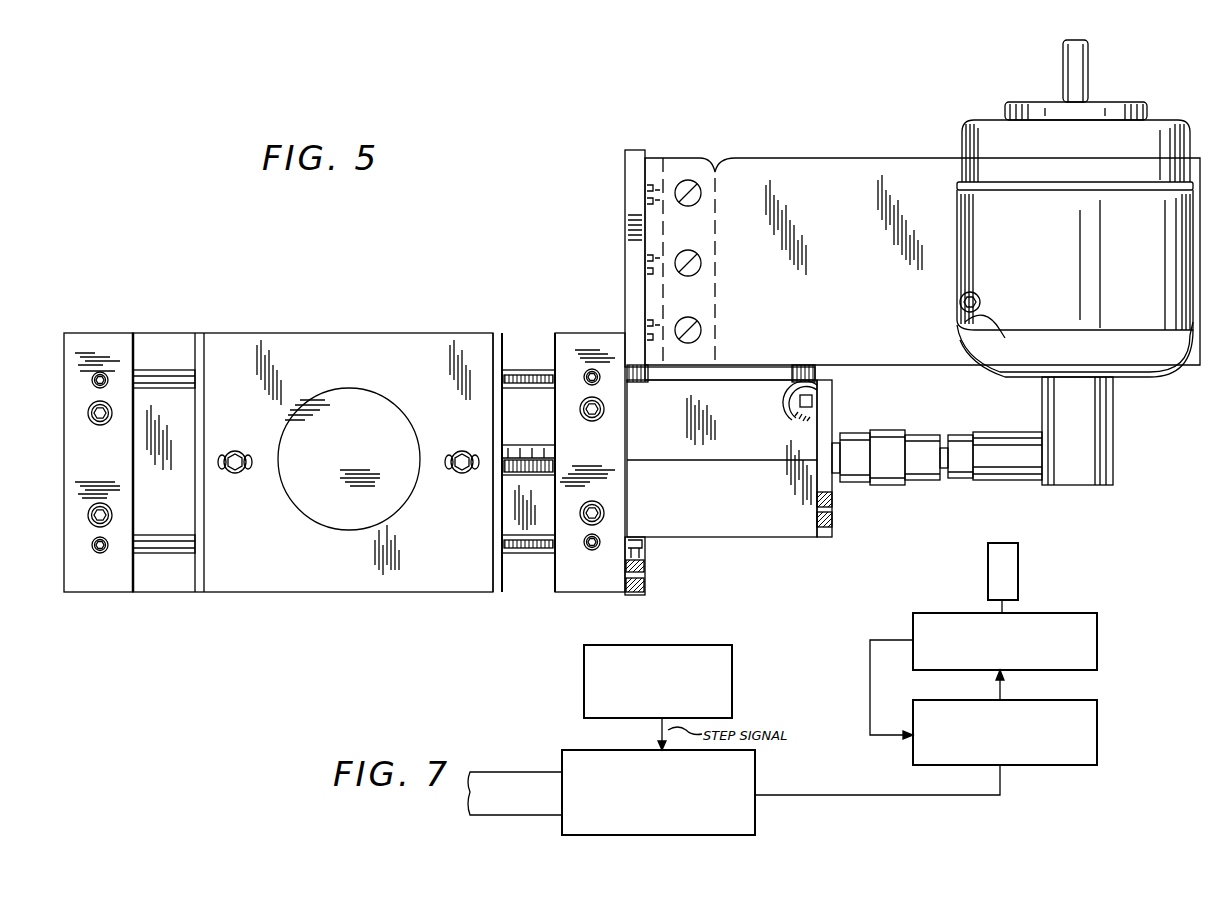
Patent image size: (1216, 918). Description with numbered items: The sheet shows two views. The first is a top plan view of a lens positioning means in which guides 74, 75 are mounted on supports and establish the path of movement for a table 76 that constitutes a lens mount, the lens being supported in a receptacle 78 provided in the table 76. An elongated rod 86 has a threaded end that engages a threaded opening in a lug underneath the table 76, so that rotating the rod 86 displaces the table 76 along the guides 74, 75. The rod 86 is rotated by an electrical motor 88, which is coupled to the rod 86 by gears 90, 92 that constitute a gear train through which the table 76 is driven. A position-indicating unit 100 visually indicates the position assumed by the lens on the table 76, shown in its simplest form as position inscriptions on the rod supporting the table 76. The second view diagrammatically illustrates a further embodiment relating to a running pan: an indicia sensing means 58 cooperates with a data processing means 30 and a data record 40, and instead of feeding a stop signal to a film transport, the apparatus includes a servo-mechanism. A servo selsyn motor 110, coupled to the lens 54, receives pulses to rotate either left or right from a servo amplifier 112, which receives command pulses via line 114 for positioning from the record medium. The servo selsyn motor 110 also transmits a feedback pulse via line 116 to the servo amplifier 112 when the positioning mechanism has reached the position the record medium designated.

In FIG. 5, the guide 74 is at (105, 592).
In FIG. 5, the table 76 is at (252, 592).
In FIG. 5, the receptacle 78 is at (298, 502).
In FIG. 5, the guide 75 is at (582, 592).
In FIG. 5, the elongated rod 86 is at (527, 455).
In FIG. 5, the position-indicating unit 100 is at (518, 526).
In FIG. 5, the electrical motor 88 is at (1156, 336).
In FIG. 5, the gear 90 is at (1100, 455).
In FIG. 5, the gear 92 is at (1010, 484).
In FIG. 7, the indicia sensing means 58 is at (584, 700).
In FIG. 7, the data processing means 30 is at (752, 824).
In FIG. 7, the data record 40 is at (490, 772).
In FIG. 7, the lens 54 is at (1018, 573).
In FIG. 7, the servo selsyn motor 110 is at (1089, 659).
In FIG. 7, the servo amplifier 112 is at (1074, 755).
In FIG. 7, the feedback line 116 is at (870, 690).
In FIG. 7, the command line 114 is at (880, 796).